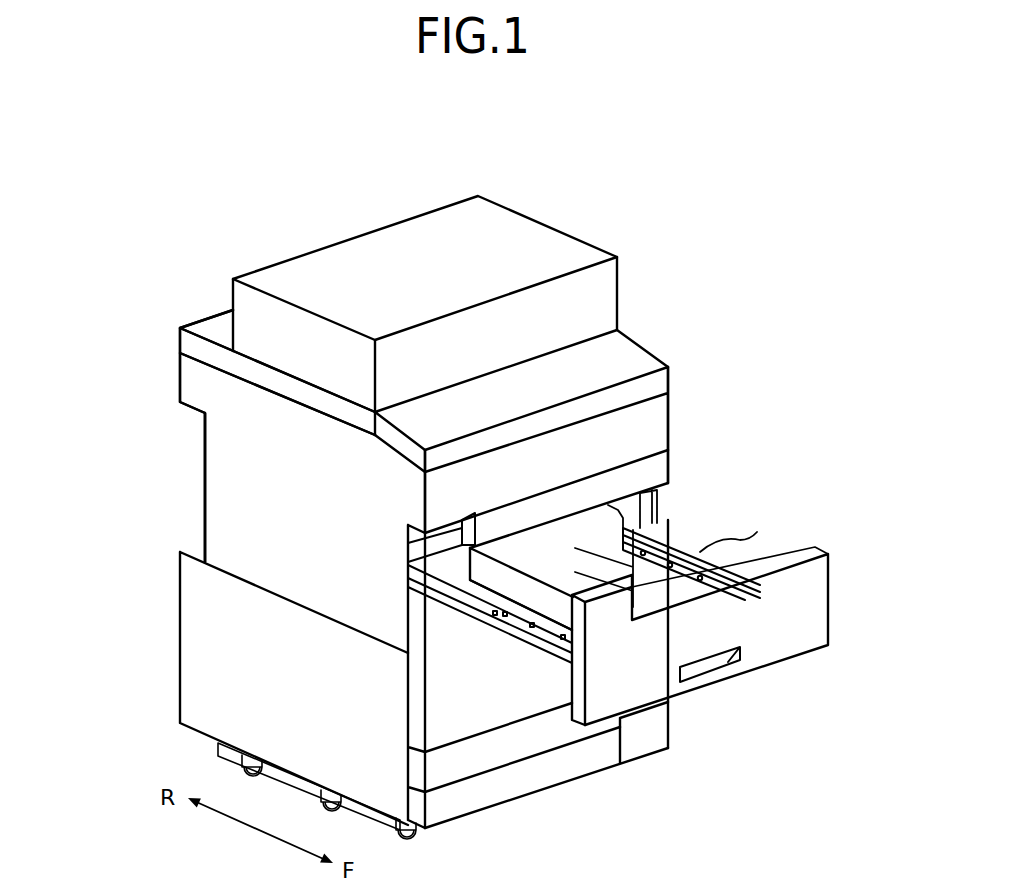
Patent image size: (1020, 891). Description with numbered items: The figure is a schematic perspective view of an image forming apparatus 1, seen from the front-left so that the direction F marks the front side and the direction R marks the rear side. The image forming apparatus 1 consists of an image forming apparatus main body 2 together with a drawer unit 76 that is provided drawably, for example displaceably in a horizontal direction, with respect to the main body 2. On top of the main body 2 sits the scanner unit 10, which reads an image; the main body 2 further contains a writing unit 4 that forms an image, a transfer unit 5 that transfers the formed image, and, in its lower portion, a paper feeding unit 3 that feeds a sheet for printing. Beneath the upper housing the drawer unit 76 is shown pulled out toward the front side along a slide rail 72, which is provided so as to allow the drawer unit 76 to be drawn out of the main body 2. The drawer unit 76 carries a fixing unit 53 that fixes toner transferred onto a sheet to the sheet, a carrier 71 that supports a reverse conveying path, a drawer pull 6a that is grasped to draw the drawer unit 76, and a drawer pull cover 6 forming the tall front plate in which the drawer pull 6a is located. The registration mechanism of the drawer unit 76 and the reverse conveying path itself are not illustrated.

The image forming apparatus 1 is at (610, 148).
The scanner unit 10 is at (652, 291).
The writing unit 4 is at (163, 336).
The image forming apparatus main body 2 is at (196, 441).
The transfer unit 5 is at (176, 490).
The paper feeding unit 3 is at (546, 812).
The drawer pull cover 6 is at (812, 597).
The drawer pull 6a is at (698, 667).
The drawer unit 76 is at (704, 522).
The slide rail 72 is at (458, 585).
The fixing unit 53 is at (453, 568).
The carrier 71 is at (530, 636).